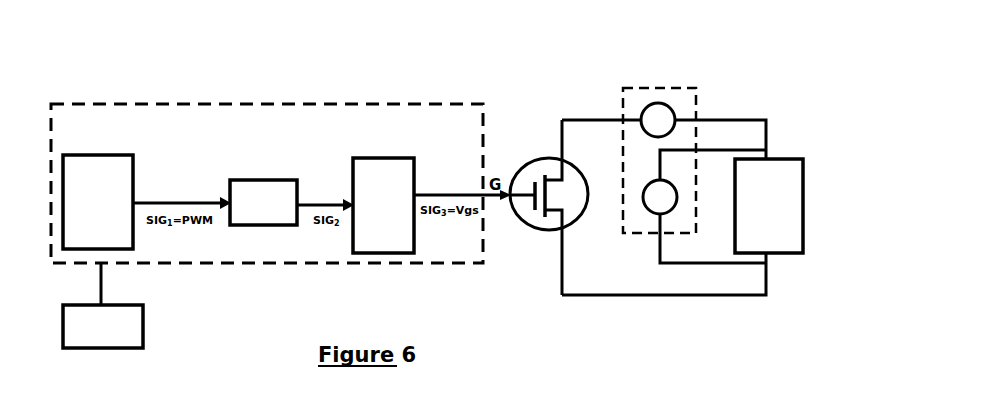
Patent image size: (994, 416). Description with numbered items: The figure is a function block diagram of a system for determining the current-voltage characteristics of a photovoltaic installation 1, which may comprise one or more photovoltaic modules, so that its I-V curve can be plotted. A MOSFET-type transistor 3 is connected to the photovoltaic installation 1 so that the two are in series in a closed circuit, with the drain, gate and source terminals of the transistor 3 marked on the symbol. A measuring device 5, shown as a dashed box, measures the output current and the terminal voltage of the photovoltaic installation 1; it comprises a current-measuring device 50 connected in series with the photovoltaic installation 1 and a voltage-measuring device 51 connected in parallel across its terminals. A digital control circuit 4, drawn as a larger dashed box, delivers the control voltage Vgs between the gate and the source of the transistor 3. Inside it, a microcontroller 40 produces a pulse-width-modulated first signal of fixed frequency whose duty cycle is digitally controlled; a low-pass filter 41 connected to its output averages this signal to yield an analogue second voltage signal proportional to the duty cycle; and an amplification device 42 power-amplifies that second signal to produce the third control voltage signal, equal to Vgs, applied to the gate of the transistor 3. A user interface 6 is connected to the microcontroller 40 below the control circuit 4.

The photovoltaic installation 1 is at (783, 173).
The MOSFET-type transistor 3 is at (554, 158).
The control circuit 4 is at (282, 262).
The measuring device 5 is at (675, 88).
The user interface 6 is at (110, 332).
The microcontroller 40 is at (102, 155).
The low-pass filter 41 is at (257, 187).
The amplification device 42 is at (378, 167).
The current-measuring device 50 is at (673, 110).
The voltage-measuring device 51 is at (672, 207).